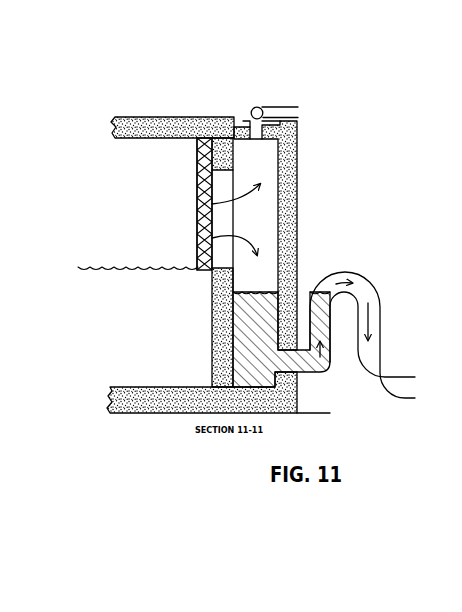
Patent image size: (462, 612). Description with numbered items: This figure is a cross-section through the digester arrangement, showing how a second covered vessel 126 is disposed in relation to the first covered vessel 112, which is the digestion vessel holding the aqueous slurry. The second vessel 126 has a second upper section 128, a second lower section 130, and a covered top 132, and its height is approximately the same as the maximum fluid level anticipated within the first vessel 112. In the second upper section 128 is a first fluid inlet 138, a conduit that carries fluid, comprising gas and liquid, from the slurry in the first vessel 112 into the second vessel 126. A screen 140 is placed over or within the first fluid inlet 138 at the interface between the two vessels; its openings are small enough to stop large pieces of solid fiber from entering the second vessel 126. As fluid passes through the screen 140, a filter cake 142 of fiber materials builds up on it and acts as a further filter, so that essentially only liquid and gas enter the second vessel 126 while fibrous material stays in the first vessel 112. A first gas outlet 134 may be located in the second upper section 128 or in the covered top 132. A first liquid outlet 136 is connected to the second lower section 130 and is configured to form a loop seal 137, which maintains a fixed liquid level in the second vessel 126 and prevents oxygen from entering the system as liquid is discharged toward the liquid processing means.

The first covered vessel 112 is at (188, 110).
The second covered vessel 126 is at (243, 108).
The second upper section 128 is at (258, 237).
The second lower section 130 is at (255, 300).
The covered top 132 is at (307, 123).
The first gas outlet 134 is at (257, 142).
The first liquid outlet 136 is at (325, 367).
The loop seal 137 is at (360, 292).
The first fluid inlet 138 is at (222, 213).
The screen 140 is at (197, 178).
The filter cake 142 is at (197, 162).